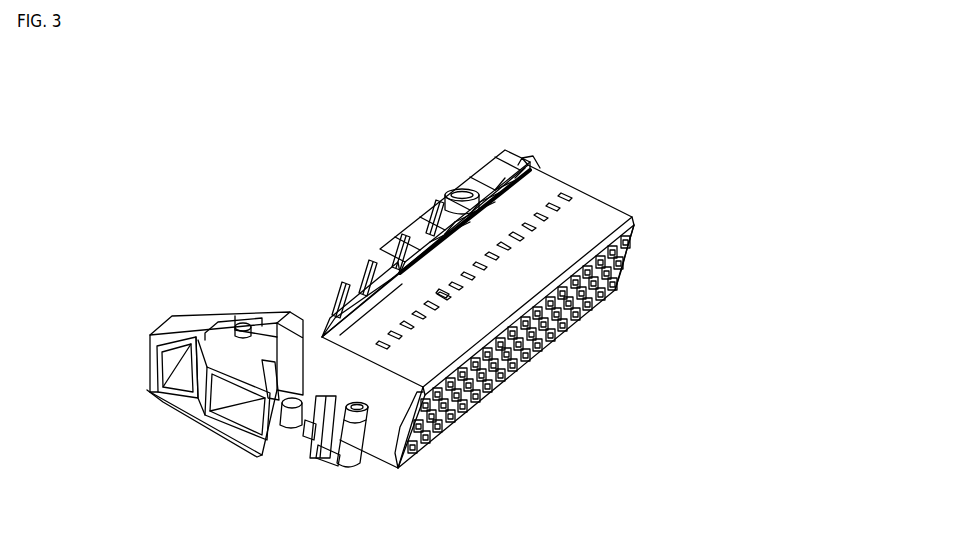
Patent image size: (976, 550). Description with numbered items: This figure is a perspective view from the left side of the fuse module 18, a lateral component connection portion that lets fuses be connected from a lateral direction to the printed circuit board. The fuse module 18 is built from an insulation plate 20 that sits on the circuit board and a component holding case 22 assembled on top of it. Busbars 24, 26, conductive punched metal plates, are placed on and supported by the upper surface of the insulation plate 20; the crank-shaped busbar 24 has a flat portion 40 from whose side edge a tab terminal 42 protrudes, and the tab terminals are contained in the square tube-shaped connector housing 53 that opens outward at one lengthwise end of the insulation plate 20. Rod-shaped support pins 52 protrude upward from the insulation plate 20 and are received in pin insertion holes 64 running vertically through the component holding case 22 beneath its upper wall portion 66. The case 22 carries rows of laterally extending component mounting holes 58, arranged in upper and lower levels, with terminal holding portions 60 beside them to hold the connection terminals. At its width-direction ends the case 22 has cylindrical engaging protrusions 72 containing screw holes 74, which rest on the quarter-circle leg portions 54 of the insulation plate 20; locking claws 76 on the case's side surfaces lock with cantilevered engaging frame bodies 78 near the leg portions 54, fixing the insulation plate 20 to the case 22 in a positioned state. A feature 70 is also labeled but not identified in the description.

The fuse module 18 is at (390, 78).
The insulation plate 20 is at (214, 252).
The component holding case 22 is at (560, 130).
The busbar 24 is at (360, 320).
The busbar 26 is at (219, 330).
The flat portion 40 is at (294, 337).
The tab terminal 42 is at (268, 370).
The support pins 52 is at (572, 200).
The connector housing 53 is at (187, 345).
The leg portions 54 is at (332, 460).
The component mounting holes 58 is at (567, 278).
The terminal holding portions 60 is at (392, 263).
The pin insertion holes 64 is at (557, 207).
The upper wall portion 66 is at (503, 342).
The detection hole 70 is at (446, 296).
The engaging protrusions 72 is at (350, 448).
The screw holes 74 is at (353, 405).
The locking claws 76 is at (316, 428).
The engaging frame bodies 78 is at (328, 408).